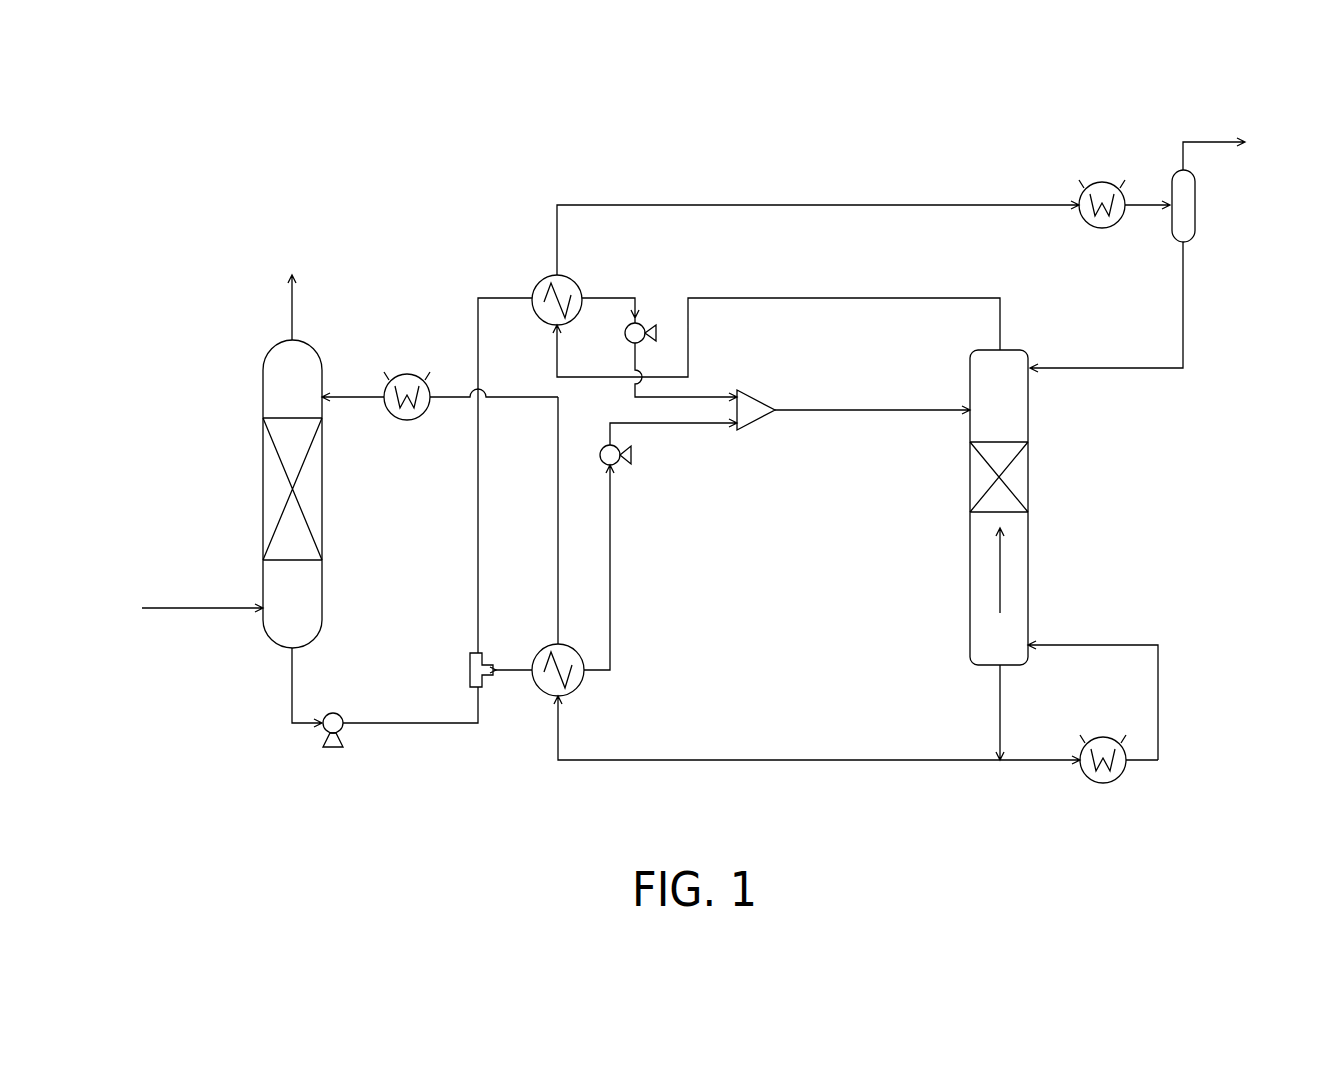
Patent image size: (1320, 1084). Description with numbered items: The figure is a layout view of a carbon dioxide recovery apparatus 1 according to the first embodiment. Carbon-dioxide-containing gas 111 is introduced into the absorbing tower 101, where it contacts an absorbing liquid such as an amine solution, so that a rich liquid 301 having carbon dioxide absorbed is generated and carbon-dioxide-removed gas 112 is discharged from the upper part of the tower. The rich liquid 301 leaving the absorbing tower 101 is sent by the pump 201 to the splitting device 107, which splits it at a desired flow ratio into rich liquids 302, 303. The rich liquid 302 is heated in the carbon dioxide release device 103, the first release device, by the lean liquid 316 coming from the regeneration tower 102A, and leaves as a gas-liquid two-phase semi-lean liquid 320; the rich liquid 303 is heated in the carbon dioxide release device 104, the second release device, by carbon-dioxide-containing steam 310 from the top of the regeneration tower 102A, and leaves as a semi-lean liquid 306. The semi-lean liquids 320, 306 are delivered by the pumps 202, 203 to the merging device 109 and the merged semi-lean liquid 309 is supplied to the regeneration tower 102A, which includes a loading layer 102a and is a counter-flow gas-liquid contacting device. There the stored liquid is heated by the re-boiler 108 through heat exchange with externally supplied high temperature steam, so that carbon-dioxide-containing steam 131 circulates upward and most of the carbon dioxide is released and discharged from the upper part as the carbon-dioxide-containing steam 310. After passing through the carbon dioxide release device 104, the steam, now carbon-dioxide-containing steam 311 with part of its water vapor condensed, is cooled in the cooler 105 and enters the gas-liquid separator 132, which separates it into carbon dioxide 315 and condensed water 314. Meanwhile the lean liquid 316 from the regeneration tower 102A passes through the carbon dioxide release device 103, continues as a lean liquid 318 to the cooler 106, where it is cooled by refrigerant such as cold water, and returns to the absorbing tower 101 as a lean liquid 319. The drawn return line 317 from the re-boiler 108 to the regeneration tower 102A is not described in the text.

The carbon dioxide recovery apparatus 1 is at (395, 210).
The absorbing tower 101 is at (262, 405).
The loading layer 102a is at (1020, 475).
The regeneration tower 102A is at (1028, 530).
The carbon dioxide release device 103 is at (582, 690).
The carbon dioxide release device 104 is at (537, 285).
The cooler 105 is at (1098, 183).
The cooler 106 is at (407, 374).
The splitting device 107 is at (470, 668).
The re-boiler 108 is at (1078, 765).
The merging device 109 is at (748, 430).
The carbon-dioxide-containing gas 111 is at (183, 608).
The carbon-dioxide-removed gas 112 is at (292, 313).
The carbon-dioxide-containing steam 131 is at (1000, 575).
The gas-liquid separator 132 is at (1195, 195).
The pump 201 is at (340, 747).
The pump 202 is at (622, 468).
The pump 203 is at (648, 321).
The rich liquid 301 is at (310, 733).
The rich liquid 302 is at (518, 672).
The rich liquid 303 is at (477, 540).
The semi-lean liquid 306 is at (603, 298).
The semi-lean liquid 309 is at (880, 412).
The carbon-dioxide-containing steam 310 is at (825, 298).
The carbon-dioxide-containing steam 311 is at (830, 205).
The condensed water 314 is at (1185, 282).
The carbon dioxide 315 is at (1183, 142).
The lean liquid 316 is at (822, 762).
The reboiler return line 317 is at (1143, 640).
The lean liquid 318 is at (558, 570).
The lean liquid 319 is at (360, 397).
The semi-lean liquid 320 is at (612, 590).